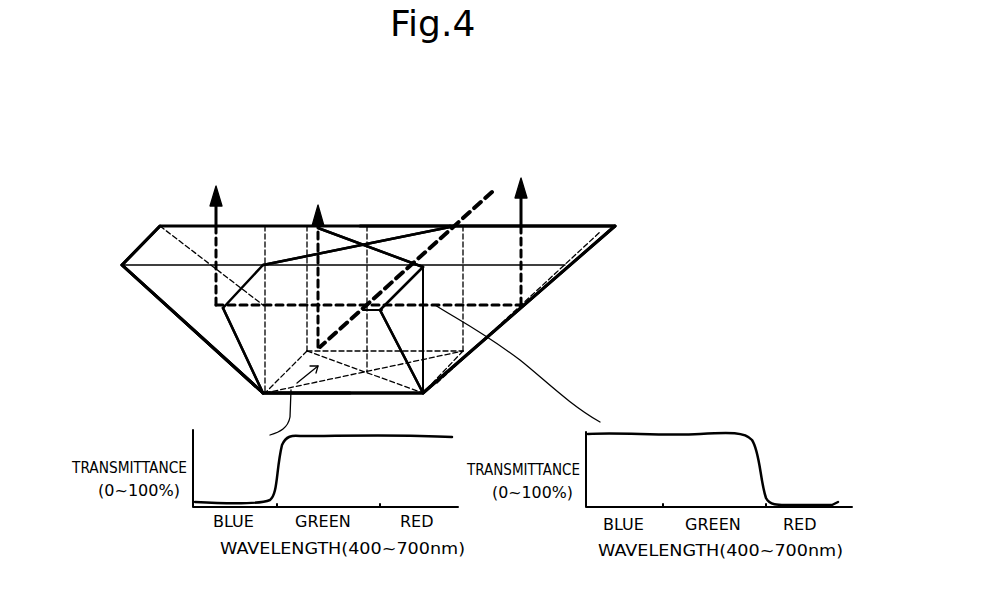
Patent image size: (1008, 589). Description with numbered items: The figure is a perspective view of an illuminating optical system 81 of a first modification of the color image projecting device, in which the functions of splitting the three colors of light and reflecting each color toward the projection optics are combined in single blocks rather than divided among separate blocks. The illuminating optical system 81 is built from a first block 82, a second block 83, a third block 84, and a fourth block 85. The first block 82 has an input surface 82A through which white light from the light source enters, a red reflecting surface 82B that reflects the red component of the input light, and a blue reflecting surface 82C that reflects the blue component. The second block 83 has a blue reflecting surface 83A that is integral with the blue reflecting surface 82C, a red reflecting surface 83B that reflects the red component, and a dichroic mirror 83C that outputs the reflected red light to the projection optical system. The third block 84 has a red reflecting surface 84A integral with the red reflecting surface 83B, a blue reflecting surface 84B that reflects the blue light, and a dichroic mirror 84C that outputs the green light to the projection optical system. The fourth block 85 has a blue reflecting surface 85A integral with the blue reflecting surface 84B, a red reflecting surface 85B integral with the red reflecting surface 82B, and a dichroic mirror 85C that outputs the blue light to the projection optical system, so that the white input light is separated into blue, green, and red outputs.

The illuminating optical system 81 is at (660, 157).
The first block 82 is at (397, 227).
The input surface 82A is at (407, 227).
The red reflecting surface 82B is at (382, 232).
The blue reflecting surface 82C is at (358, 226).
The second block 83 is at (615, 229).
The blue reflecting surface 83A is at (415, 227).
The red reflecting surface 83B is at (372, 249).
The dichroic mirror 83C is at (364, 245).
The third block 84 is at (350, 393).
The red reflecting surface 84A is at (403, 328).
The blue reflecting surface 84B is at (265, 307).
The dichroic mirror 84C is at (263, 393).
The fourth block 85 is at (140, 247).
The blue reflecting surface 85A is at (250, 325).
The red reflecting surface 85B is at (272, 248).
The dichroic mirror 85C is at (157, 297).